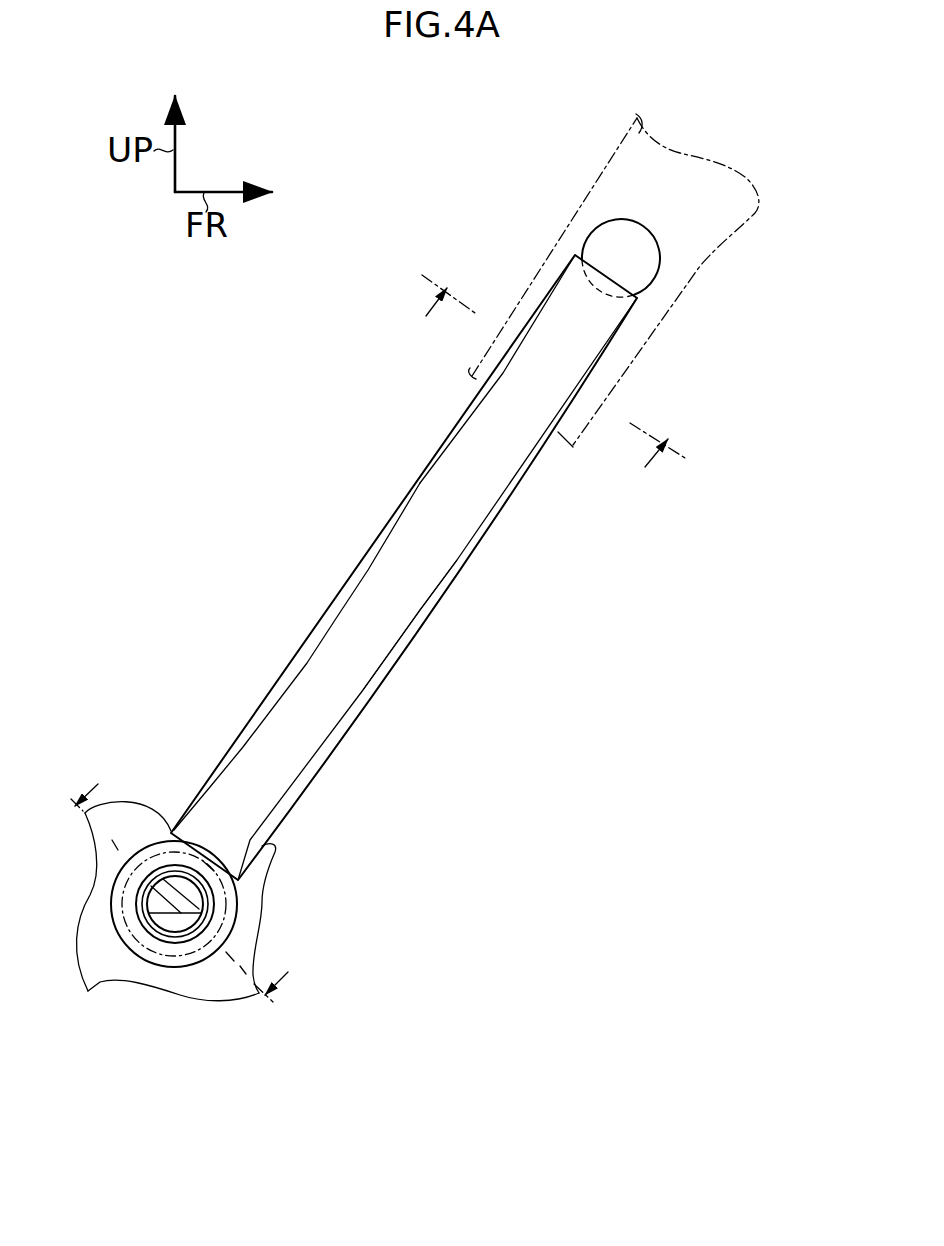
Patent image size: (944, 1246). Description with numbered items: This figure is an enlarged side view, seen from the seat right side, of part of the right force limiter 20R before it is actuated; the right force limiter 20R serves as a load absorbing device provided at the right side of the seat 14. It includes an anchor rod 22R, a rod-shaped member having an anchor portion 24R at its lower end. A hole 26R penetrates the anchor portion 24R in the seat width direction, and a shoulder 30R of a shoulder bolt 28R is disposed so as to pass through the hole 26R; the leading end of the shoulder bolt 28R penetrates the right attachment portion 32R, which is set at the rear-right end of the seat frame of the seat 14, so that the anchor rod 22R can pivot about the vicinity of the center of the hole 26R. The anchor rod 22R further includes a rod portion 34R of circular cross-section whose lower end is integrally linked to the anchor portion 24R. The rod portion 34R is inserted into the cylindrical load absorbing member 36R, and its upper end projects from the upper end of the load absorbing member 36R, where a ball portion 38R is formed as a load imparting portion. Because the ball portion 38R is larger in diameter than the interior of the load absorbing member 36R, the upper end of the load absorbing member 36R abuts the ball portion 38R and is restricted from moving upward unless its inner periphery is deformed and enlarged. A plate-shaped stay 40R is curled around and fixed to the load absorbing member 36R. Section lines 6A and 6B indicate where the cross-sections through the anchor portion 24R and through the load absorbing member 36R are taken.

The right force limiter 20R is at (302, 543).
The anchor rod 22R is at (440, 484).
The anchor portion 24R is at (231, 897).
The hole 26R is at (188, 922).
The shoulder bolt 28R is at (203, 981).
The shoulder 30R is at (177, 915).
The right attachment portion 32R is at (270, 880).
The seat 14 is at (279, 907).
The rod portion 34R is at (404, 619).
The load absorbing member 36R is at (463, 573).
The ball portion 38R is at (652, 272).
The stay 40R is at (714, 246).
The section line 6A is at (199, 877).
The section line 6B is at (542, 388).